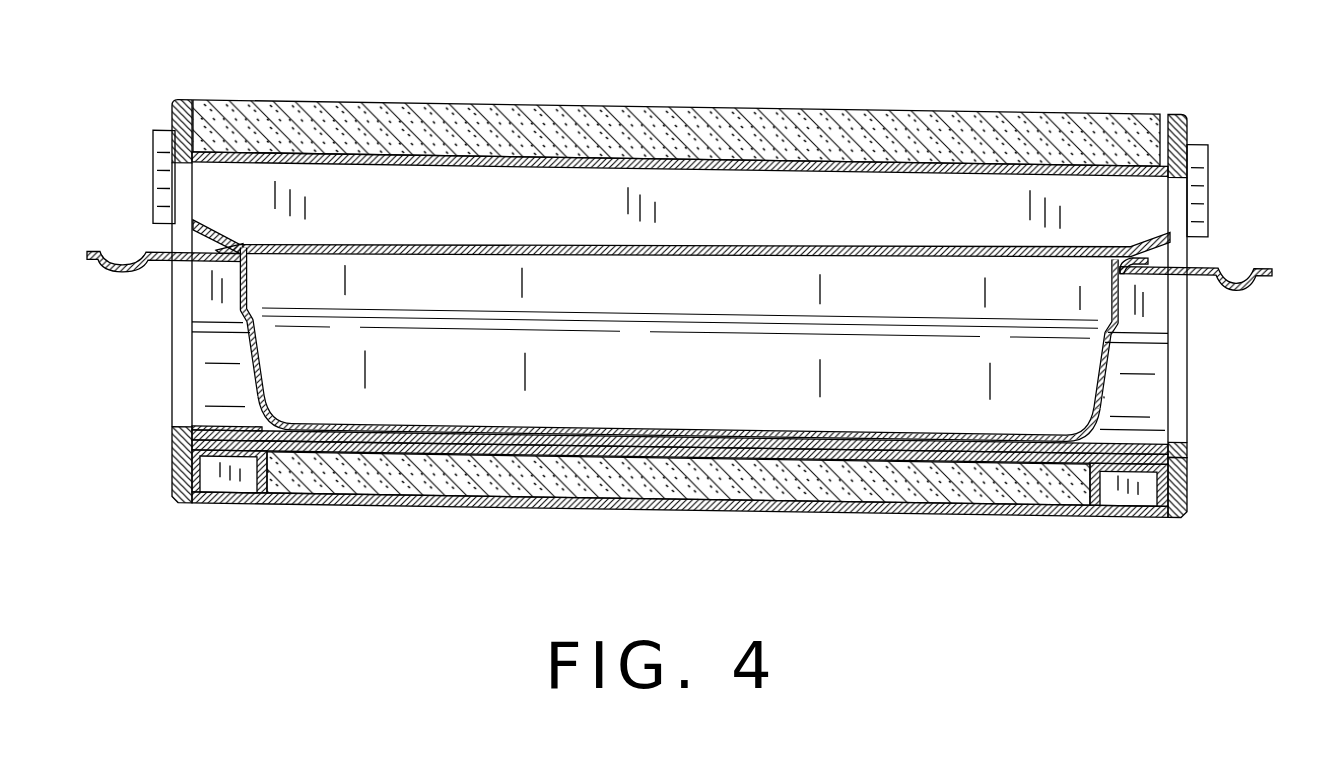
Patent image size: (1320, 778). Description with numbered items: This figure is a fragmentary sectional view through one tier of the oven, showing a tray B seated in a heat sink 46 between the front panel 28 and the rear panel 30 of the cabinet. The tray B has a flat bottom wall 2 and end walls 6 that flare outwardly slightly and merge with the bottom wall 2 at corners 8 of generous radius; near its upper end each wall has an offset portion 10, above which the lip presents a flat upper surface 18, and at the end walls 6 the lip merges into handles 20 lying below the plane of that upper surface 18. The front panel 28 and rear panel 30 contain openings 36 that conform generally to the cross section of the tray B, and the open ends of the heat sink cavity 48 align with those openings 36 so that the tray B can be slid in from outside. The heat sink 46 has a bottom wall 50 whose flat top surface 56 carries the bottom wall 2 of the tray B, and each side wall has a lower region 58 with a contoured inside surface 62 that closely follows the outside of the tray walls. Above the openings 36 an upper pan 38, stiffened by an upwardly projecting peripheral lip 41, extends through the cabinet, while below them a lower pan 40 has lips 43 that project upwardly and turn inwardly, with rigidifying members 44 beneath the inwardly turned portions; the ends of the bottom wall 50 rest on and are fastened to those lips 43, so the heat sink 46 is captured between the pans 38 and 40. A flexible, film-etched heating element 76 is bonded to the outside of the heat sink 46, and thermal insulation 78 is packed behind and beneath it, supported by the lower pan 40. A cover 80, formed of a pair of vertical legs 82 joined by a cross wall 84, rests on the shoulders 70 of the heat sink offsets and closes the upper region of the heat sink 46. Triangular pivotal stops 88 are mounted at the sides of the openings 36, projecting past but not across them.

The bottom wall 2 is at (640, 427).
The end walls 6 is at (260, 367).
The corners 8 is at (277, 424).
The offset portion 10 is at (250, 284).
The upper surface 18 is at (240, 226).
The handles 20 is at (112, 252).
The front panel 28 is at (172, 461).
The rear panel 30 is at (1187, 478).
The openings 36 is at (172, 392).
The upper pan 38 is at (1086, 160).
The lower pan 40 is at (1079, 512).
The peripheral lip 41 is at (205, 122).
The lips 43 is at (220, 432).
The rigidifying members 44 is at (253, 472).
The heat sink 46 is at (198, 293).
The cavity 48 is at (212, 356).
The bottom wall 50 is at (1163, 437).
The flat top surface 56 is at (793, 431).
The lower region 58 is at (1148, 310).
The inside surface 62 is at (1128, 377).
The shoulders 70 is at (1149, 260).
The heating element 76 is at (603, 457).
The thermal insulation 78 is at (905, 132).
The cover 80 is at (795, 233).
The vertical legs 82 is at (697, 208).
The cross wall 84 is at (1004, 243).
The pivotal stops 88 is at (153, 150).
The tray B is at (1125, 397).